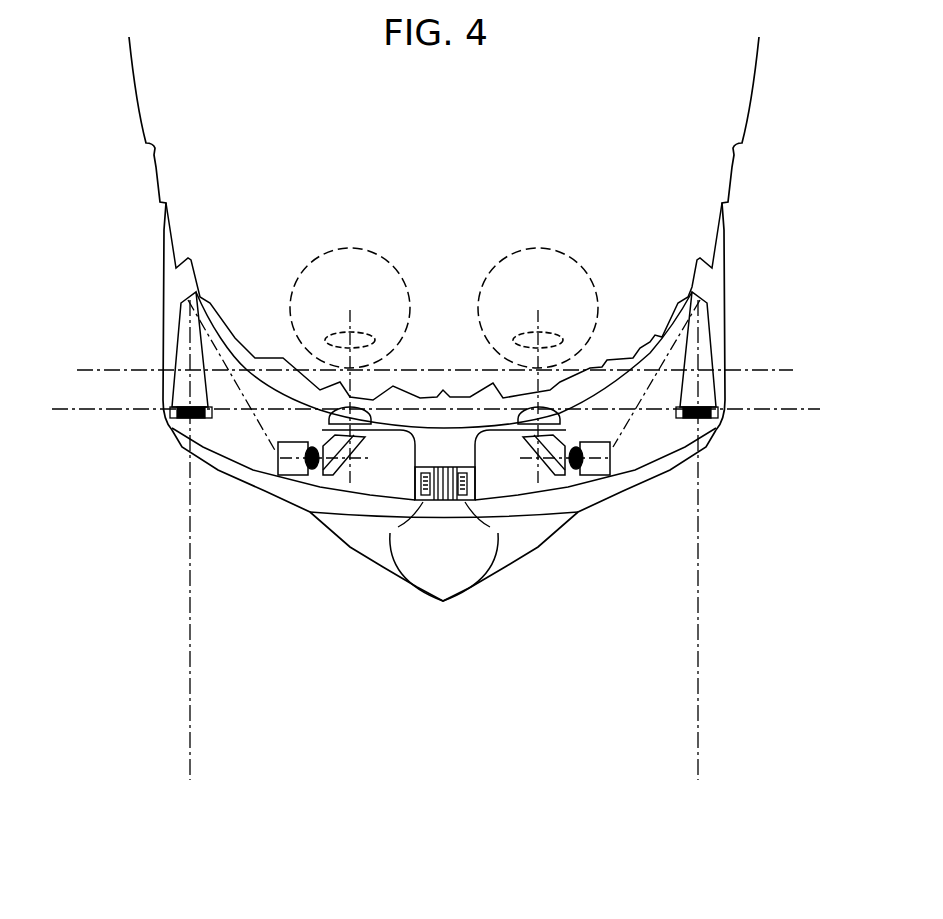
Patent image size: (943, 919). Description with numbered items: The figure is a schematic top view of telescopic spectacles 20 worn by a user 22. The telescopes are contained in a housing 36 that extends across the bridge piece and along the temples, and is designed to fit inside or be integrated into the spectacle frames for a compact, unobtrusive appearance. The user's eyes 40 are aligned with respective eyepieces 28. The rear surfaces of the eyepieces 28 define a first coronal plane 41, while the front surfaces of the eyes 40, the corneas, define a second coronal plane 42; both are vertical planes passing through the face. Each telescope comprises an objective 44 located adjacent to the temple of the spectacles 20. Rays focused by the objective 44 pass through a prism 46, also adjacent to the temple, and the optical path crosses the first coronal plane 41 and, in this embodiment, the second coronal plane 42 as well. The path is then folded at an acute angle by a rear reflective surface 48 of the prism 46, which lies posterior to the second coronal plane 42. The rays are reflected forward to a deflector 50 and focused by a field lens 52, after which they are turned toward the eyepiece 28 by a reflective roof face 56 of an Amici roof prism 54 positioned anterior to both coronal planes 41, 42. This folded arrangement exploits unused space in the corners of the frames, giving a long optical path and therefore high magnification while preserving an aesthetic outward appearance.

The telescopic spectacles 20 is at (160, 460).
The user 22 is at (733, 165).
The eyepiece 28 is at (520, 413).
The housing 36 is at (720, 324).
The eyes 40 is at (488, 273).
The first coronal plane 41 is at (102, 410).
The second coronal plane 42 is at (105, 370).
The objective 44 is at (715, 417).
The prism 46 is at (722, 351).
The rear reflective surface 48 is at (702, 293).
The deflector 50 is at (610, 468).
The field lens 52 is at (578, 472).
The Amici roof prism 54 is at (566, 432).
The reflective roof face 56 is at (527, 455).